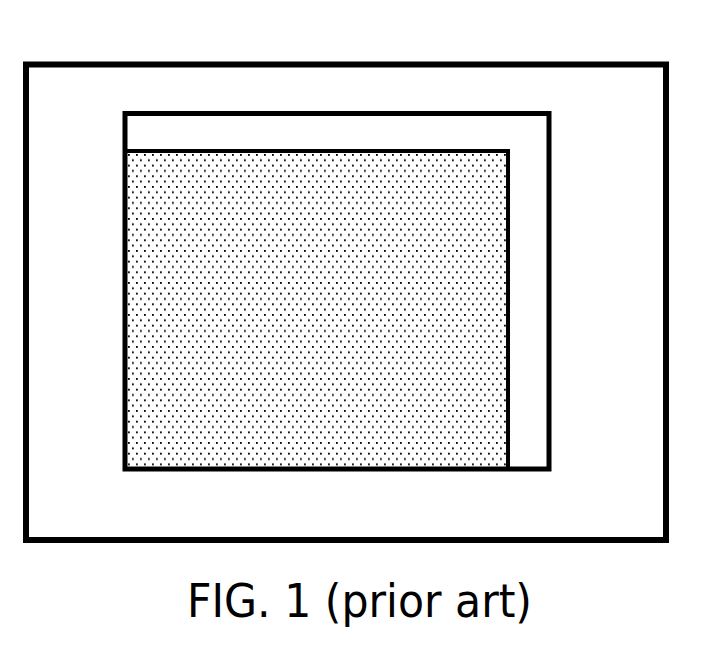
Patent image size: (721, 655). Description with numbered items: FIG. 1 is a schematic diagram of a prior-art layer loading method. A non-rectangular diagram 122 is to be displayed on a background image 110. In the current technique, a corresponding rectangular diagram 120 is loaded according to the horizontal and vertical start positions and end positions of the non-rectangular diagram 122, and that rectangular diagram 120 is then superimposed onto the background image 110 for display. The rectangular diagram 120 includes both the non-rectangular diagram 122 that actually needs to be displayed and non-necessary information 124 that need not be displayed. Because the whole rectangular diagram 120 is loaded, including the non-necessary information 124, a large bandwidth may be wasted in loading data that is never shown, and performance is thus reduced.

The background image 110 is at (67, 62).
The rectangular diagram 120 is at (180, 110).
The non-rectangular diagram 122 is at (333, 127).
The non-necessary information 124 is at (448, 170).